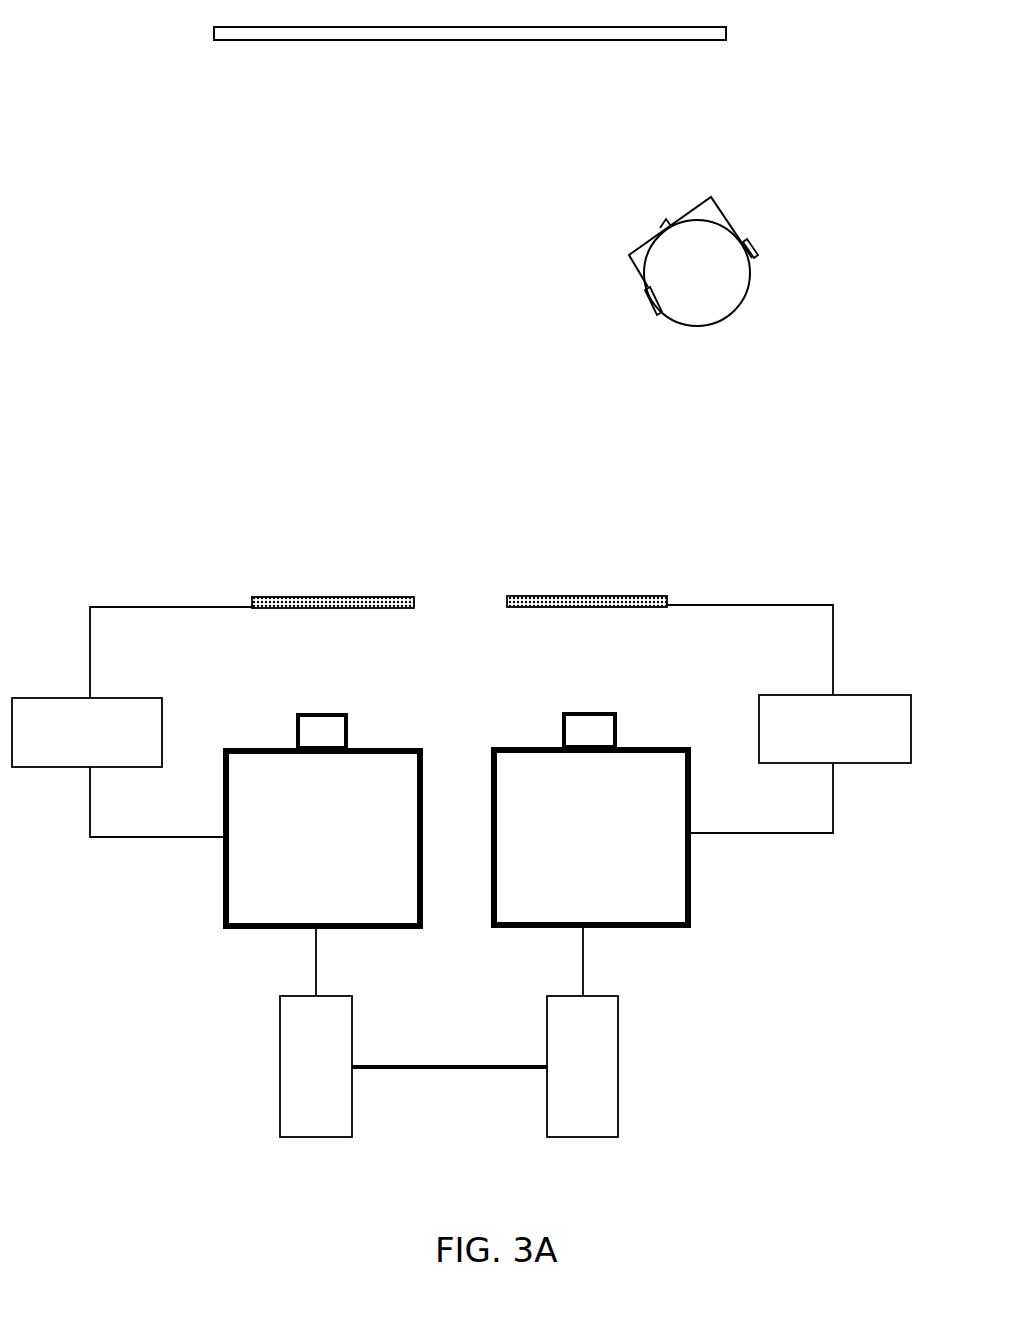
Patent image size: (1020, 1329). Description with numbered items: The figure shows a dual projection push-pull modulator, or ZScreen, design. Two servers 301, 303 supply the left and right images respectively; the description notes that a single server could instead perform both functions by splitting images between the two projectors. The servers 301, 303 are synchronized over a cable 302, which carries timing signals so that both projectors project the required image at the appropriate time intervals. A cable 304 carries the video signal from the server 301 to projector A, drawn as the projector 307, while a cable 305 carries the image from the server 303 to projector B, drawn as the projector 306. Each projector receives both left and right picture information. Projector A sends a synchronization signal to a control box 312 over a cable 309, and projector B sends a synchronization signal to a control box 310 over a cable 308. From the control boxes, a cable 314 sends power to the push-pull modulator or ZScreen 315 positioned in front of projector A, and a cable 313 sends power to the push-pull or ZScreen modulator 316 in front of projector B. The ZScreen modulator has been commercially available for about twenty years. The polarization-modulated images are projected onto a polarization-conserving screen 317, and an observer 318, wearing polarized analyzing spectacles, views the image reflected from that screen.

The server 301 is at (316, 1066).
The cable 302 is at (449, 1091).
The server 303 is at (582, 1066).
The cable 304 is at (292, 962).
The cable 305 is at (610, 962).
The projector 306 is at (591, 819).
The projector 307 is at (323, 820).
The cable 308 is at (762, 798).
The cable 309 is at (156, 802).
The control box 310 is at (835, 729).
The control box 312 is at (87, 732).
The cable 313 is at (750, 650).
The cable 314 is at (171, 652).
The push-pull modulator 315 is at (333, 579).
The push-pull modulator 316 is at (587, 580).
The polarization-conserving screen 317 is at (512, 39).
The observer 318 is at (735, 319).